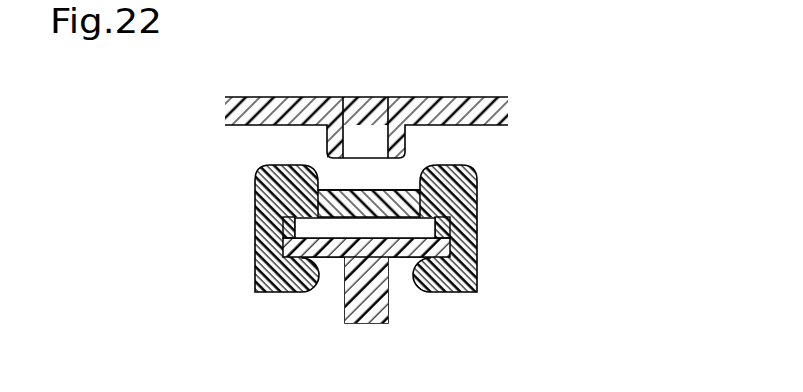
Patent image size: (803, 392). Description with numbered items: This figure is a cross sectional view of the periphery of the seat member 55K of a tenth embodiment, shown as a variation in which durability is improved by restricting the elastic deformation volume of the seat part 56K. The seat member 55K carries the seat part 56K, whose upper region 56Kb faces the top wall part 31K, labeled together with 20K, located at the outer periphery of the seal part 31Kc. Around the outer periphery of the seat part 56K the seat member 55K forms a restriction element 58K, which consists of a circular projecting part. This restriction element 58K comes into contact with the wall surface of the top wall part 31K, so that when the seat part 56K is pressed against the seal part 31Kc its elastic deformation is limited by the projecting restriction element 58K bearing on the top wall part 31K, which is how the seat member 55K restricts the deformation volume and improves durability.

The top wall part 31K is at (300, 120).
The support member 20K is at (357, 101).
The seal part 31Kc is at (395, 127).
The seat part 56K is at (393, 188).
The upper surface of elastic member 56Kb is at (413, 188).
The restriction element 58K is at (475, 169).
The seat member 55K is at (476, 235).